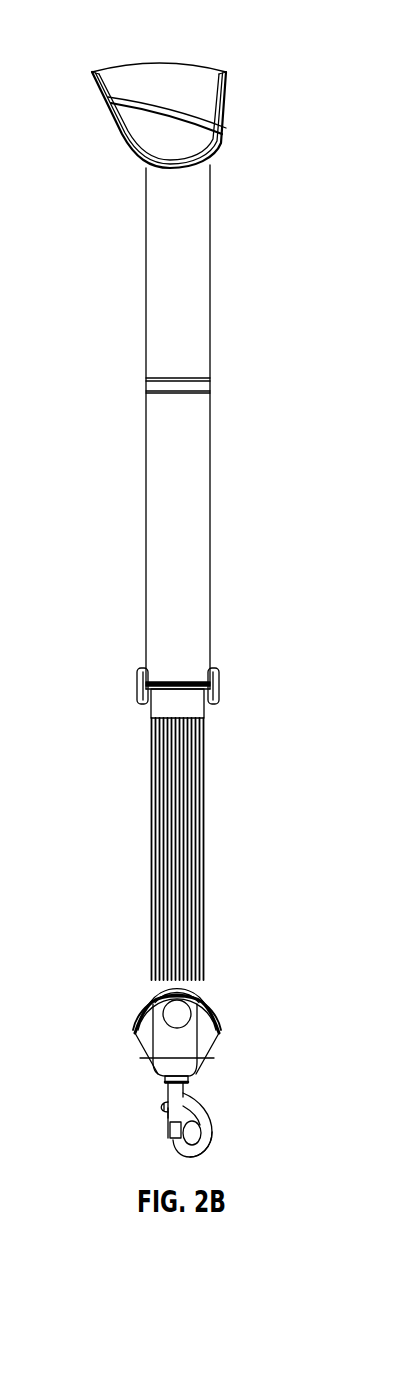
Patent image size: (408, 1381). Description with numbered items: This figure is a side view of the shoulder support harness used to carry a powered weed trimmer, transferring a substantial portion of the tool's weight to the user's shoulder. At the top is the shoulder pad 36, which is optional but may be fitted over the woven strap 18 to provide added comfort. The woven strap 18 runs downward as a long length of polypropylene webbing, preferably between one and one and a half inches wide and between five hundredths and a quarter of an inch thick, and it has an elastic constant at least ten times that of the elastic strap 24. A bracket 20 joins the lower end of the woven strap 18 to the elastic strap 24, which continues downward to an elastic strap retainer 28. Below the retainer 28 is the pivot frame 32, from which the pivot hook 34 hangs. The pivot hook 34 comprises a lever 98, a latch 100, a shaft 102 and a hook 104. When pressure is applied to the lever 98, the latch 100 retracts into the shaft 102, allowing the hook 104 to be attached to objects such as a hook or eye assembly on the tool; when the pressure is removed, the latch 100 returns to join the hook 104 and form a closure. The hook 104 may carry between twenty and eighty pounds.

The woven strap 18 is at (157, 327).
The bracket 20 is at (147, 688).
The elastic strap 24 is at (172, 818).
The elastic strap retainer 28 is at (143, 993).
The pivot frame 32 is at (138, 1037).
The pivot hook 34 is at (178, 1093).
The shoulder pad 36 is at (127, 82).
The lever 98 is at (162, 1105).
The latch 100 is at (173, 1130).
The shaft 102 is at (168, 1110).
The hook 104 is at (203, 1142).